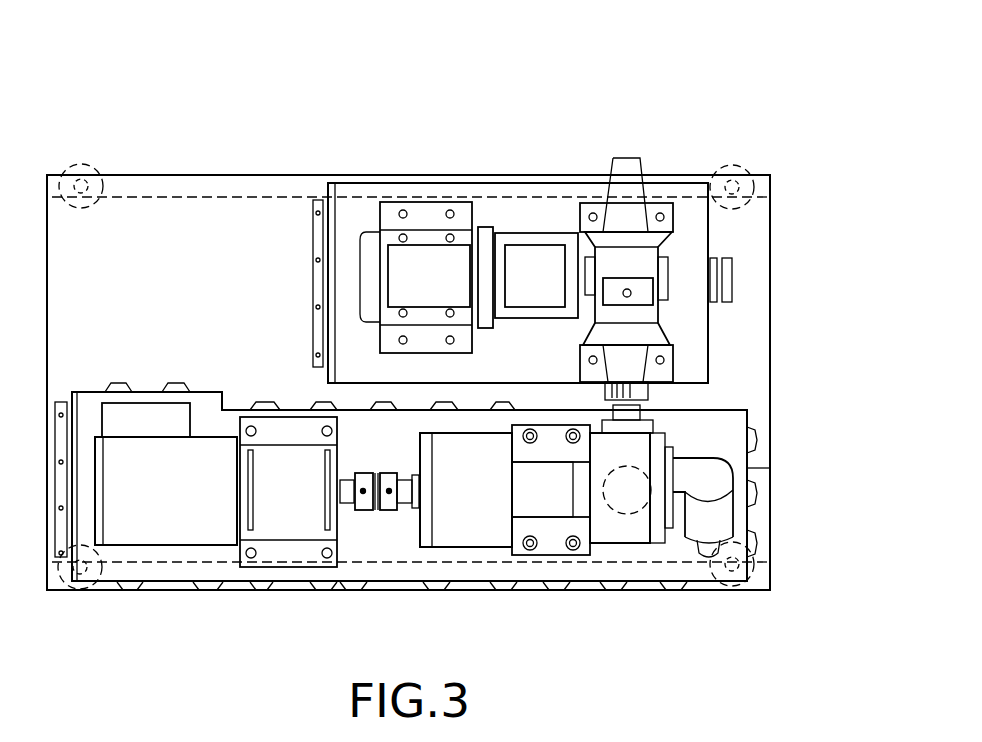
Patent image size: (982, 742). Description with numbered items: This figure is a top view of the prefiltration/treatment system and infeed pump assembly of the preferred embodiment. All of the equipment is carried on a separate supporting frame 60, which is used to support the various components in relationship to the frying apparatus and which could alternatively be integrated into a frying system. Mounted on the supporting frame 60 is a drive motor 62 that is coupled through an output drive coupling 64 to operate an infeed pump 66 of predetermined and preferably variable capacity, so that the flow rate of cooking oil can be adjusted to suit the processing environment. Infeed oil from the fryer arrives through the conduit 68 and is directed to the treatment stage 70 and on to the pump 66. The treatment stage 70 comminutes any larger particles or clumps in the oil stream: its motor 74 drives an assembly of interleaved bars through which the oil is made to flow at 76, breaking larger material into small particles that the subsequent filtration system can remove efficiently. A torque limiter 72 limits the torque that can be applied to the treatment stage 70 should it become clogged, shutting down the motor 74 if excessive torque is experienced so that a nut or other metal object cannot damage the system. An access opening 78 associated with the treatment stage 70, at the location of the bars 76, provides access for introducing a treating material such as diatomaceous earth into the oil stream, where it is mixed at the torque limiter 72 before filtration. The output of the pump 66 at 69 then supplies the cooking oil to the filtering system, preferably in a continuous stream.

The supporting frame 60 is at (185, 173).
The drive motor 62 is at (185, 547).
The output drive coupling 64 is at (373, 511).
The infeed pump 66 is at (620, 547).
The conduit 68 is at (627, 157).
The pump output 69 is at (733, 510).
The treatment stage 70 is at (707, 251).
The torque limiter 72 is at (533, 230).
The motor 74 is at (427, 226).
The interleaved bars 76 is at (607, 268).
The access opening 78 is at (648, 290).